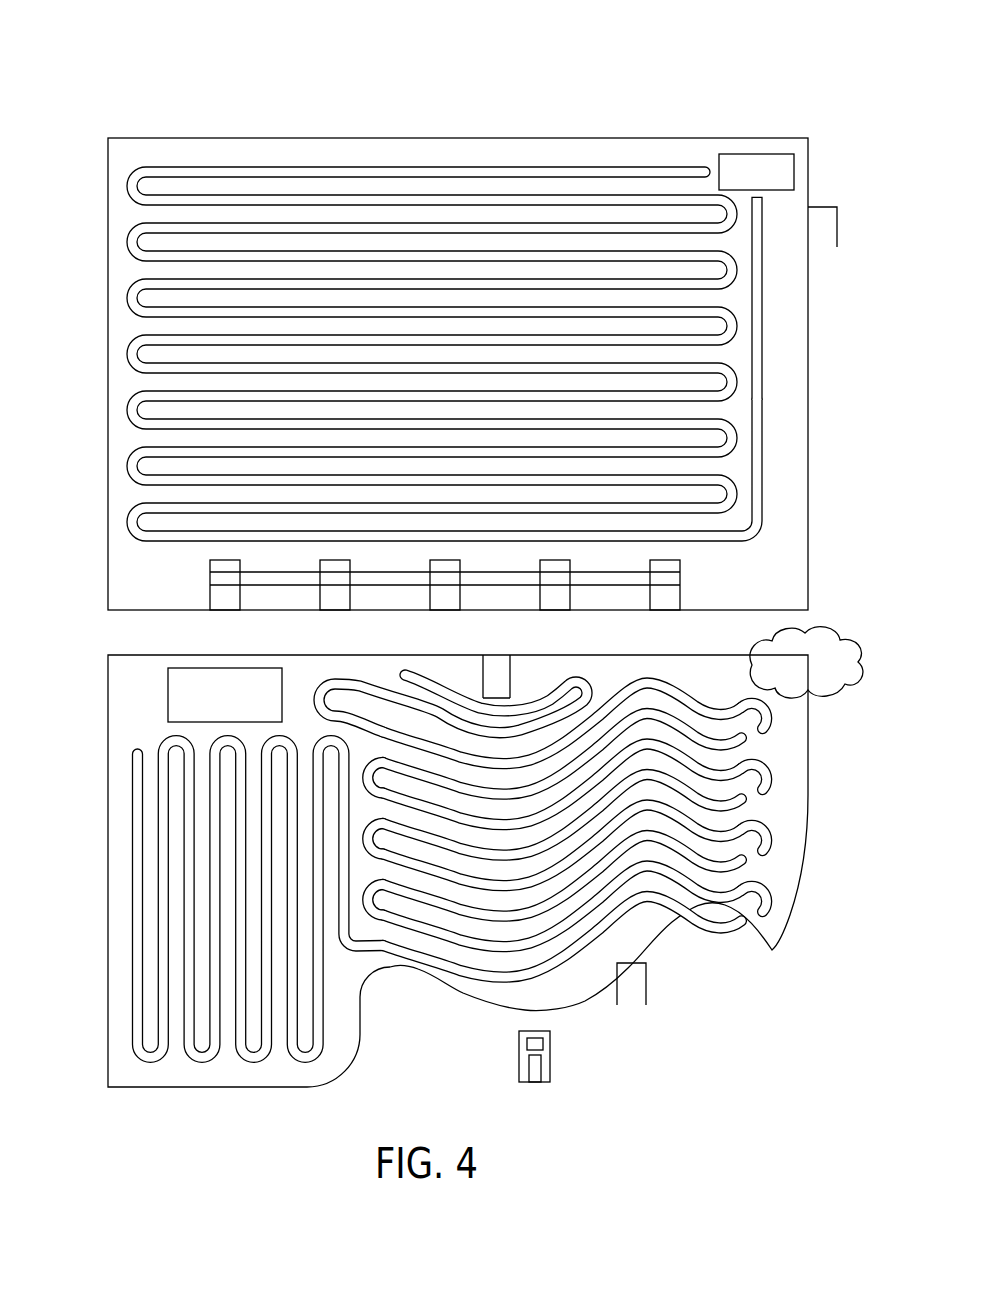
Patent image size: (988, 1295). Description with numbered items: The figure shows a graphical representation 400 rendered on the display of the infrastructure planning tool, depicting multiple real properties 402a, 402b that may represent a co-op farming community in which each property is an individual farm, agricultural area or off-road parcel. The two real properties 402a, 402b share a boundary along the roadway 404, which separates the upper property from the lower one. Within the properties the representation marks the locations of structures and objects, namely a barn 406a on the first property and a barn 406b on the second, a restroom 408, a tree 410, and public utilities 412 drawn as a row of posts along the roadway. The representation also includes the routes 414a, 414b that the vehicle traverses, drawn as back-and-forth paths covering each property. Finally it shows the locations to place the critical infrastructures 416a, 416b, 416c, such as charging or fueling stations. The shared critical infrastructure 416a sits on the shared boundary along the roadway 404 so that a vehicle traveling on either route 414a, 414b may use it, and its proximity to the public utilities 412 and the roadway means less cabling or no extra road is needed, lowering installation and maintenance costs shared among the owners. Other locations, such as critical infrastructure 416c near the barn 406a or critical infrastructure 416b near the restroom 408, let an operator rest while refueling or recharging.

The graphical representation 400 is at (90, 81).
The real property 402a is at (808, 171).
The real property 402b is at (808, 818).
The roadway 404 is at (118, 638).
The barn 406a is at (756, 154).
The barn 406b is at (168, 695).
The restroom 408 is at (553, 1057).
The tree 410 is at (832, 632).
The public utilities 412 is at (210, 583).
The route 414a is at (763, 318).
The route 414b is at (130, 938).
The shared critical infrastructure 416a is at (516, 675).
The critical infrastructure 416b is at (651, 990).
The critical infrastructure 416c is at (831, 224).